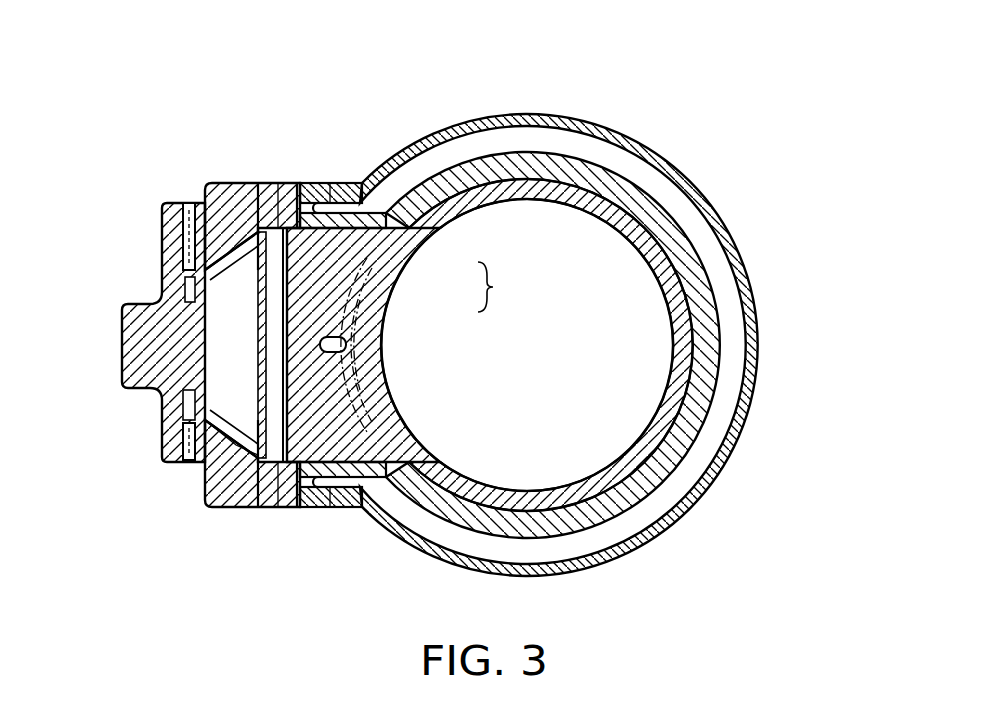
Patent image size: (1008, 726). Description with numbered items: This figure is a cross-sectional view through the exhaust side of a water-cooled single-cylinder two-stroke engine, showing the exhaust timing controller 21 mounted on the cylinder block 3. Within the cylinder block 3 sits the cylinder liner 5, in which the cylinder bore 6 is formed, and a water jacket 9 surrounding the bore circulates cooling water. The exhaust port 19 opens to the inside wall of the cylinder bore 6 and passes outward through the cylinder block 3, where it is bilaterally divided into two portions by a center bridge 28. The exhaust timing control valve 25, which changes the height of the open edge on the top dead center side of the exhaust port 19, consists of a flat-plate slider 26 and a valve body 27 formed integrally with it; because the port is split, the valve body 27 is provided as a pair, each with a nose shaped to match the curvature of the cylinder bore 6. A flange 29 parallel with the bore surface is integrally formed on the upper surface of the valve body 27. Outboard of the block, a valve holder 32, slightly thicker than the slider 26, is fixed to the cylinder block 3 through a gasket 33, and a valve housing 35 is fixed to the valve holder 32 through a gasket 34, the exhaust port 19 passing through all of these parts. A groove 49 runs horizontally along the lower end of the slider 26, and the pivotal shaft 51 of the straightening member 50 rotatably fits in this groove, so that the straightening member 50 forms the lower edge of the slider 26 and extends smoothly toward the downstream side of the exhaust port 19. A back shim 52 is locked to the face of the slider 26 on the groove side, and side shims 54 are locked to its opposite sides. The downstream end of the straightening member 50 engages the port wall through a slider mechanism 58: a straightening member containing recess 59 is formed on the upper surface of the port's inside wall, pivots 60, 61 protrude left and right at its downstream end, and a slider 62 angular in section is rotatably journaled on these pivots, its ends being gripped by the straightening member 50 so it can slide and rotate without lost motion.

The cylinder block 3 is at (565, 115).
The cylinder liner 5 is at (596, 172).
The cylinder bore 6 is at (619, 232).
The water jacket 9 is at (651, 170).
The exhaust port 19 is at (388, 433).
The exhaust timing controller 21 is at (308, 88).
The exhaust timing control valve 25 is at (500, 287).
The slider 26 is at (372, 274).
The valve body 27 is at (375, 296).
The center bridge 28 is at (380, 347).
The flange 29 is at (376, 378).
The valve holder 32 is at (280, 183).
The gasket 33 is at (300, 183).
The gasket 34 is at (257, 183).
The valve housing 35 is at (215, 183).
The groove 49 is at (283, 303).
The straightening member 50 is at (215, 333).
The pivotal shaft 51 is at (278, 378).
The back shim 52 is at (262, 405).
The side shims 54 is at (352, 190).
The slider mechanism 58 is at (163, 336).
The straightening member containing recess 59 is at (246, 462).
The pivot 60 is at (188, 462).
The pivot 61 is at (183, 195).
The slider 62 is at (178, 378).